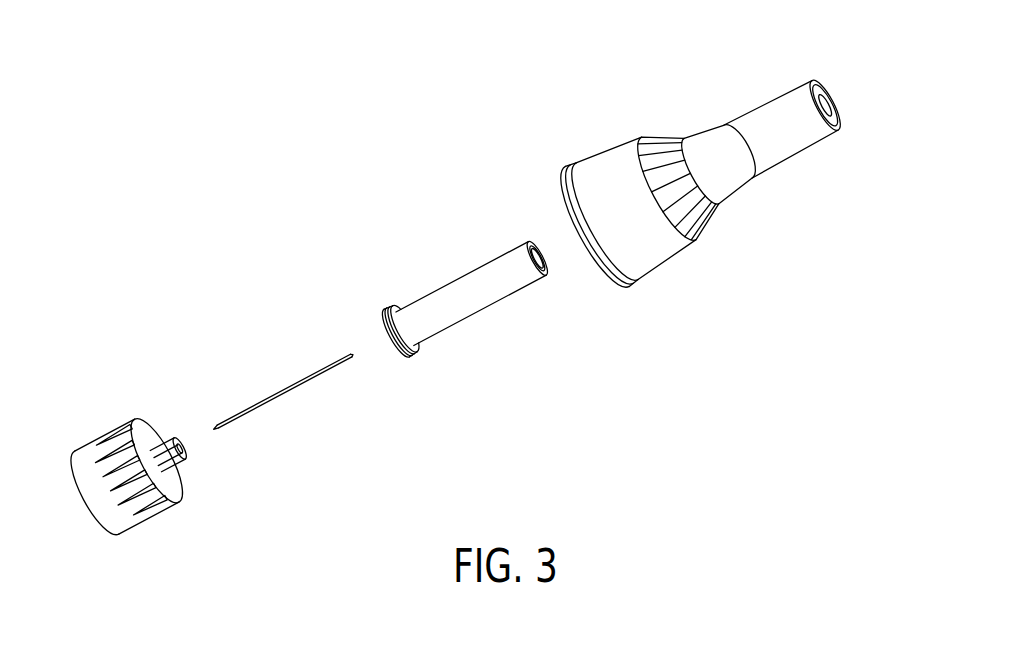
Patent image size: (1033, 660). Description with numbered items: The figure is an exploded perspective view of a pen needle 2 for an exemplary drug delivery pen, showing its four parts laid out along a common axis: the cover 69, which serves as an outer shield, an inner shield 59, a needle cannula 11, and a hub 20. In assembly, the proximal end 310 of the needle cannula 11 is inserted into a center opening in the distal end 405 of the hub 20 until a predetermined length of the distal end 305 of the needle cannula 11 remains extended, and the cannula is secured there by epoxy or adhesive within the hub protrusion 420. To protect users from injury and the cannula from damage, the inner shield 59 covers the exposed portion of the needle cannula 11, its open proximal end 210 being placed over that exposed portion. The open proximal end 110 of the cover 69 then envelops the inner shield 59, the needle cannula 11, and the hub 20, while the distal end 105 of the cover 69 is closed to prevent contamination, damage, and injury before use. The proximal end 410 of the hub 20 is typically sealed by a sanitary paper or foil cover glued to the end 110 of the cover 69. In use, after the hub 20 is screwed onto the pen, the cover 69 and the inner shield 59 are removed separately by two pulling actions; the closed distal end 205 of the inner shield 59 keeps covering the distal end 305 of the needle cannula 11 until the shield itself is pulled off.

The pen needle 2 is at (257, 183).
The distal end of the cover 105 is at (813, 81).
The open proximal end of the cover 110 is at (563, 183).
The cover 69 is at (787, 164).
The distal end of the inner shield 205 is at (543, 278).
The open proximal end of the inner shield 210 is at (395, 347).
The inner shield 59 is at (473, 307).
The distal end of the needle cannula 305 is at (351, 354).
The proximal end of the needle cannula 310 is at (216, 427).
The needle cannula 11 is at (287, 393).
The distal end of the hub 405 is at (175, 443).
The hub protrusion 420 is at (182, 460).
The proximal end of the hub 410 is at (97, 523).
The hub 20 is at (125, 524).